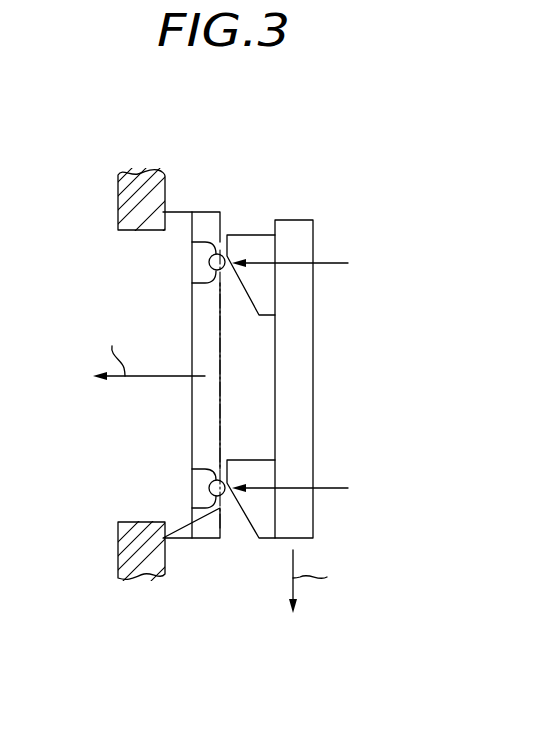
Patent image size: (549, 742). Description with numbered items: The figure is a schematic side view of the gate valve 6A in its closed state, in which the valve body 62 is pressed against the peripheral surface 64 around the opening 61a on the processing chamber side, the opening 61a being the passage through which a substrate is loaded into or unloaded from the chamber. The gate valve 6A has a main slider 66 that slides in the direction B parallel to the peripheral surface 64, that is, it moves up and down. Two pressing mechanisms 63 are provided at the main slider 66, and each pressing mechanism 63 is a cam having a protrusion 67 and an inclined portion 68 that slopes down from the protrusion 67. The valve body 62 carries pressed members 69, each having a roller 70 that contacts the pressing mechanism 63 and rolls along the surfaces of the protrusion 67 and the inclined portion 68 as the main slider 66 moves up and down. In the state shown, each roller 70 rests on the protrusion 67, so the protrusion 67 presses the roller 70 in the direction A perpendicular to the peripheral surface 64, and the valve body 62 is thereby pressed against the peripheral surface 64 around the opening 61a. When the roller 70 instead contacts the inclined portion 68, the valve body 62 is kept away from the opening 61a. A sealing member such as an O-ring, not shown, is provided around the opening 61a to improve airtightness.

The gate valve 6A is at (270, 121).
The opening 61a is at (124, 230).
The valve body 62 is at (178, 539).
The pressing mechanism 63 is at (306, 344).
The peripheral surface 64 is at (176, 168).
The main slider 66 is at (314, 352).
The protrusion 67 is at (216, 226).
The inclined portion 68 is at (263, 291).
The pressed member 69 is at (205, 297).
The roller 70 is at (208, 262).